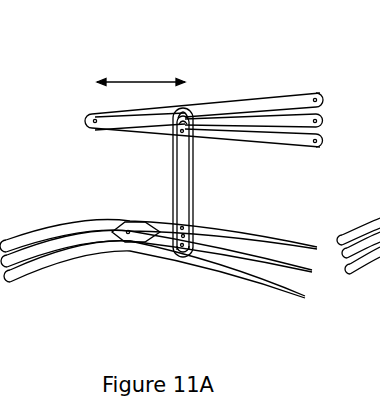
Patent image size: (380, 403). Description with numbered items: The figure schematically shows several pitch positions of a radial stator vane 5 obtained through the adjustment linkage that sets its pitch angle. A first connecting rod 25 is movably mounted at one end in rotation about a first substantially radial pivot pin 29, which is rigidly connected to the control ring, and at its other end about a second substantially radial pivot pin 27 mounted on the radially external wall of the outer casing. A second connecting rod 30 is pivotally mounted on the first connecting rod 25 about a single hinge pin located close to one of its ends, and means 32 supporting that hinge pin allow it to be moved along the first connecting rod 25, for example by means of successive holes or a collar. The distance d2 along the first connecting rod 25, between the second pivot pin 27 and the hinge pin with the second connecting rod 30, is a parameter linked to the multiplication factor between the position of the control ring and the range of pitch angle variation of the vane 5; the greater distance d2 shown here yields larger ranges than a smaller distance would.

The radial stator vane 5 is at (50, 265).
The first connecting rod 25 is at (278, 98).
The second pivot pin 27 is at (85, 121).
The first pivot pin 29 is at (322, 102).
The second connecting rod 30 is at (193, 187).
The means supporting the hinge pin 32 is at (185, 107).
The distance d2 is at (158, 82).